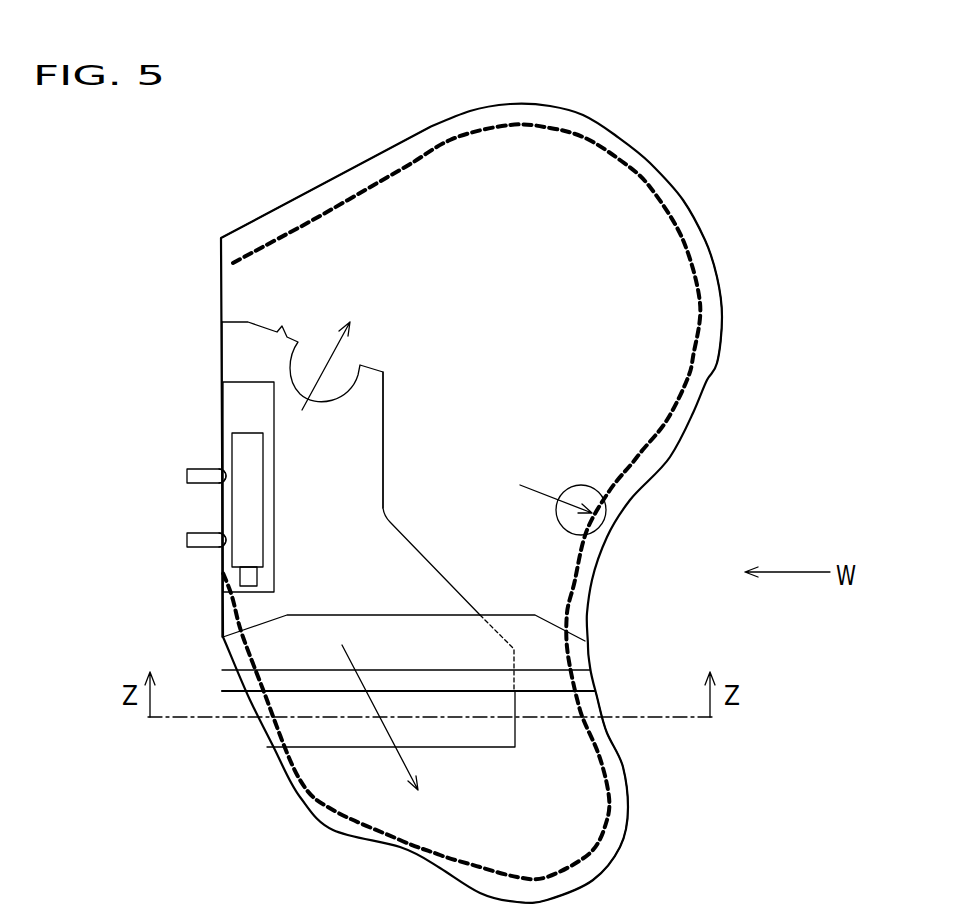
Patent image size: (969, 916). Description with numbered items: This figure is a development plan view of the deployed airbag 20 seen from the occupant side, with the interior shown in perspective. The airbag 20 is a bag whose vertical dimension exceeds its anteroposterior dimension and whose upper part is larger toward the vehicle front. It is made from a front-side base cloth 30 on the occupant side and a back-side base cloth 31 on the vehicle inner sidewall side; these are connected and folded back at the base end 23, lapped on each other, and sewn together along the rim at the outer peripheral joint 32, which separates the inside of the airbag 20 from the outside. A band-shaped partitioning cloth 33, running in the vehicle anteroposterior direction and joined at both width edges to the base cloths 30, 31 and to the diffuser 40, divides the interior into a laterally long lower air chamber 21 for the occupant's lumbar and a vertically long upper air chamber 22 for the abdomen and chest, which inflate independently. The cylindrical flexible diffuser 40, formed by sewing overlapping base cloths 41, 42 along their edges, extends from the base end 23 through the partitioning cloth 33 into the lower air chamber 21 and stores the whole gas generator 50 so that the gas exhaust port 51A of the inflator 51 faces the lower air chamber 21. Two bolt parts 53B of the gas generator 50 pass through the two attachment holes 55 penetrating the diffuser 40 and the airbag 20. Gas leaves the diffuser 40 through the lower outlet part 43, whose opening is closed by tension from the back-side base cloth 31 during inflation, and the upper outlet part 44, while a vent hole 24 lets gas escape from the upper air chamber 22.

The airbag 20 is at (721, 445).
The lower air chamber 21 is at (550, 806).
The upper air chamber 22 is at (637, 332).
The base end 23 is at (207, 500).
The vent hole 24 is at (580, 520).
The front-side base cloth 30 is at (526, 501).
The back-side base cloth 31 is at (645, 218).
The outer peripheral joint 32 is at (297, 222).
The partitioning cloth 33 is at (553, 683).
The diffuser 40 is at (400, 474).
The base cloth of diffuser 41 is at (435, 440).
The vehicle side base cloth of diffuser 42 is at (358, 418).
The lower outlet part 43 is at (372, 750).
The upper outlet part 44 is at (313, 358).
The gas generator 50 is at (291, 488).
The inflator 51 is at (240, 447).
The gas exhaust port 51A is at (213, 587).
The bolt parts 53B is at (187, 476).
The attachment holes 55 is at (215, 474).